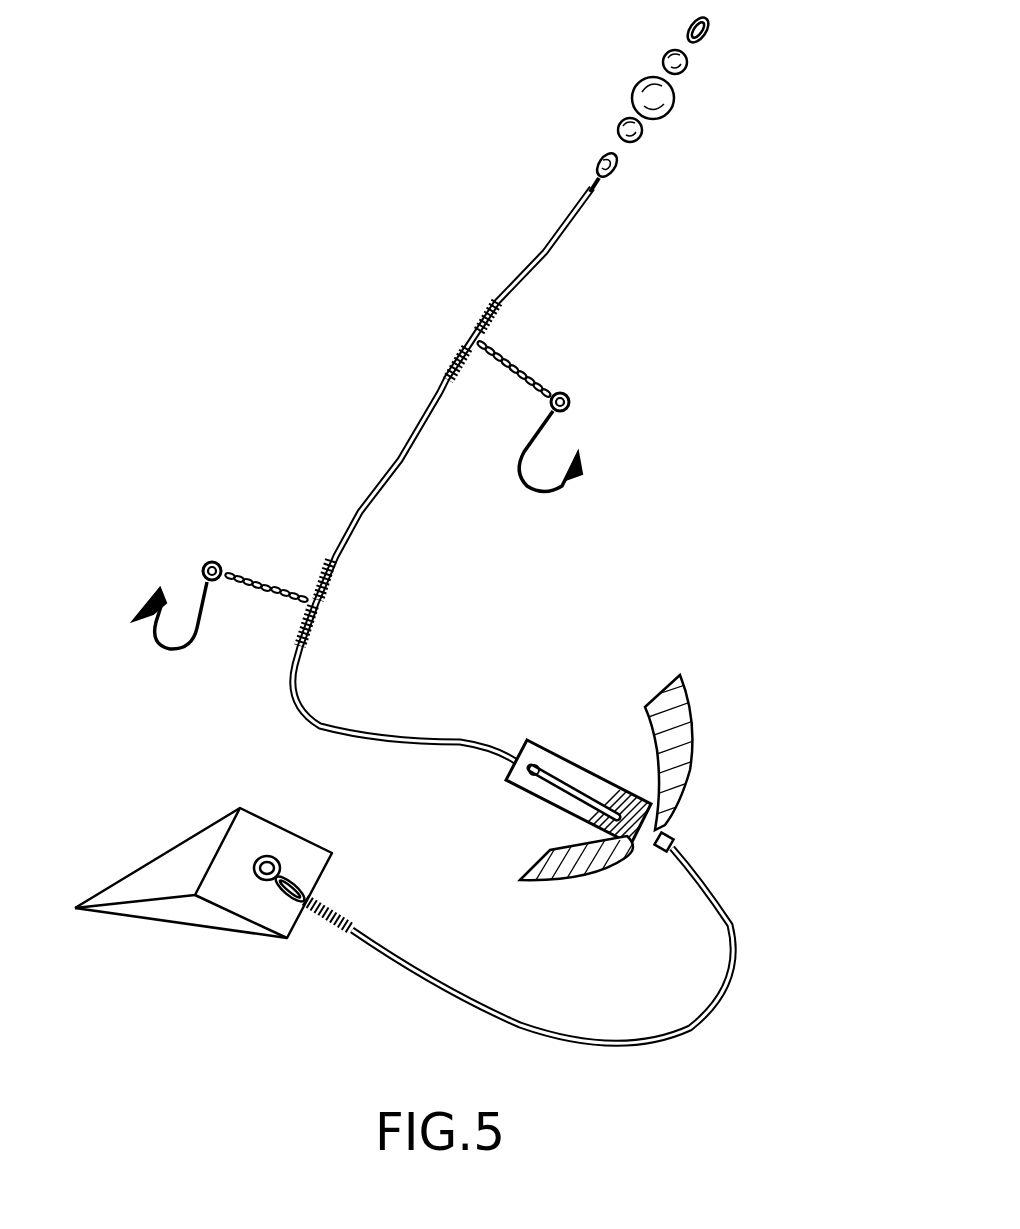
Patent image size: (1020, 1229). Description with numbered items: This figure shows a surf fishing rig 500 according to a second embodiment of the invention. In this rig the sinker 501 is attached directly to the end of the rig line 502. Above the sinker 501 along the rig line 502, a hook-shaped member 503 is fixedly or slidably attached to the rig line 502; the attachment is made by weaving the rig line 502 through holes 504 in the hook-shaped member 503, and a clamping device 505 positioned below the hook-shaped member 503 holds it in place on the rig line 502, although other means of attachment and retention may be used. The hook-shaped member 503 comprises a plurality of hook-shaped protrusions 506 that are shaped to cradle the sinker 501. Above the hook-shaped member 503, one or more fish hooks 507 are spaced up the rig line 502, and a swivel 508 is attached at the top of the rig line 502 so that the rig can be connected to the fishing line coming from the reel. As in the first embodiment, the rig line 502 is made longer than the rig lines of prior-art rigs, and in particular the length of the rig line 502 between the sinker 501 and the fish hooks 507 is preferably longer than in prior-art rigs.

The surf fishing rig 500 is at (280, 255).
The sinker 501 is at (170, 912).
The rig line 502 is at (733, 925).
The hook-shaped member 503 is at (610, 794).
The holes 504 is at (605, 835).
The clamping device 505 is at (668, 828).
The hook-shaped protrusions 506 is at (683, 725).
The fish hooks 507 is at (543, 493).
The swivel 508 is at (677, 103).